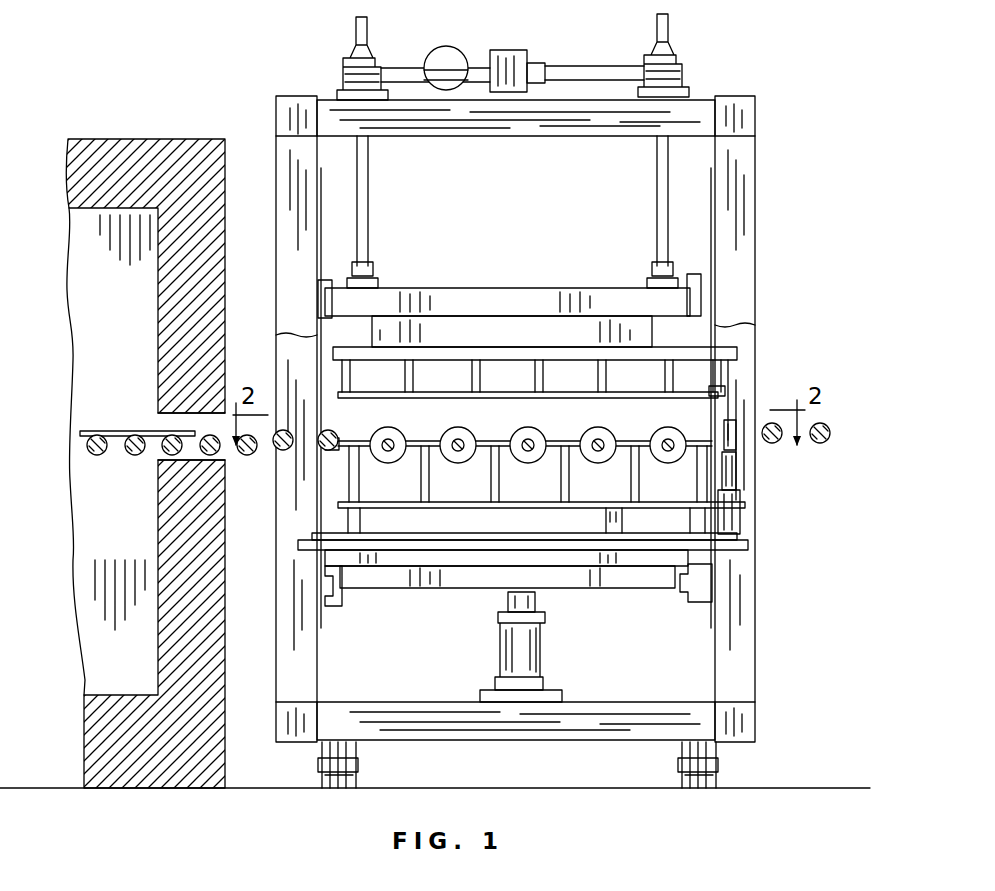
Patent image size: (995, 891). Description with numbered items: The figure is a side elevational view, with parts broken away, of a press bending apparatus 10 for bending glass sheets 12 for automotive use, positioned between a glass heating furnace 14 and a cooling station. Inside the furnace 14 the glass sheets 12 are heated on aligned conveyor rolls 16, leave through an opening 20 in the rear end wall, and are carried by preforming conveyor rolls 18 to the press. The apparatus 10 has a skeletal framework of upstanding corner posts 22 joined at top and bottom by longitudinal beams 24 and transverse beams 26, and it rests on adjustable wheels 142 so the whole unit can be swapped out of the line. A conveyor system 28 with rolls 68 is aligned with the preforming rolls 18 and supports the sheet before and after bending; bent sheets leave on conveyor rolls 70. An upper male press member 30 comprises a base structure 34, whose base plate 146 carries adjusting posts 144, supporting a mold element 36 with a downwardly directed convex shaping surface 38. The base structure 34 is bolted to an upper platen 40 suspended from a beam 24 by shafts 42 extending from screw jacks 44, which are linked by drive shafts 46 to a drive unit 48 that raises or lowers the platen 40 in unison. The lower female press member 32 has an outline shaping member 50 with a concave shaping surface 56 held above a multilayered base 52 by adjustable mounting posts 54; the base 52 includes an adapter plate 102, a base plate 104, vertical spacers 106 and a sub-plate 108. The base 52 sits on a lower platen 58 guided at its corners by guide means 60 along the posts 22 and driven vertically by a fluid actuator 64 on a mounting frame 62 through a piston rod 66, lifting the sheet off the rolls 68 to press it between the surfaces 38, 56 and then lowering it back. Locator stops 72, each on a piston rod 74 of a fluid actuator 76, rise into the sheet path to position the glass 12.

The press bending apparatus 10 is at (788, 66).
The glass sheet 12 is at (110, 431).
The furnace 14 is at (166, 150).
The conveyor rolls 16 is at (134, 456).
The preforming conveyor rolls 18 is at (252, 456).
The opening 20 is at (162, 420).
The corner posts 22 is at (285, 178).
The longitudinal beams 24 is at (700, 112).
The transverse beams 26 is at (293, 108).
The conveyor system 28 is at (362, 432).
The upper male press member 30 is at (758, 336).
The lower female press member 32 is at (756, 490).
The base structure 34 is at (568, 332).
The mold element 36 is at (580, 392).
The shaping surface 38 is at (622, 396).
The upper platen 40 is at (554, 300).
The shafts 42 is at (369, 168).
The screw jacks 44 is at (354, 60).
The drive shafts 46 is at (412, 66).
The drive unit 48 is at (508, 60).
The shaping member 50 is at (540, 460).
The multilayered base 52 is at (372, 530).
The adjustable mounting posts 54 is at (428, 468).
The shaping surface 56 is at (624, 441).
The lower platen 58 is at (460, 582).
The guide means 60 is at (343, 582).
The mounting frame 62 is at (480, 693).
The fluid actuator 64 is at (546, 652).
The piston rod 66 is at (538, 604).
The rolls 68 is at (457, 434).
The conveyor rolls 70 is at (824, 444).
The locator stops 72 is at (730, 422).
The piston rod 74 is at (734, 462).
The fluid actuator 76 is at (738, 498).
The adapter plate 102 is at (482, 545).
The base plate 104 is at (406, 542).
The vertical spacers 106 is at (556, 522).
The sub-plate 108 is at (646, 542).
The adjustable wheels 142 is at (332, 782).
The adjusting posts 144 is at (536, 382).
The base plate 146 is at (440, 356).